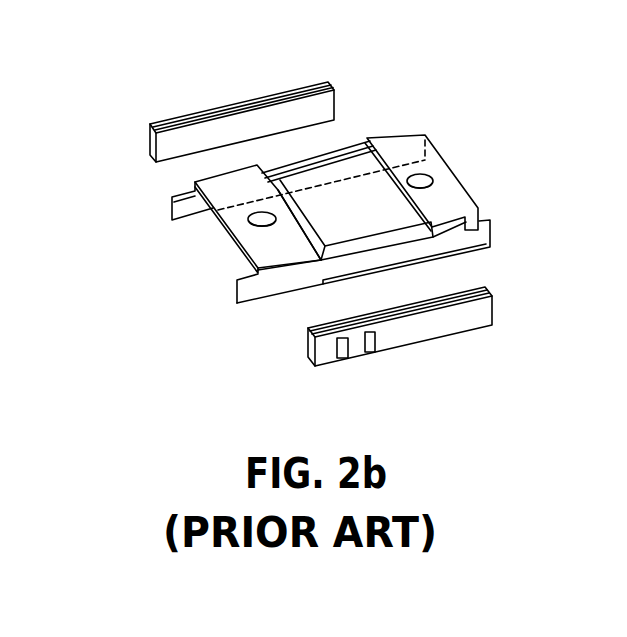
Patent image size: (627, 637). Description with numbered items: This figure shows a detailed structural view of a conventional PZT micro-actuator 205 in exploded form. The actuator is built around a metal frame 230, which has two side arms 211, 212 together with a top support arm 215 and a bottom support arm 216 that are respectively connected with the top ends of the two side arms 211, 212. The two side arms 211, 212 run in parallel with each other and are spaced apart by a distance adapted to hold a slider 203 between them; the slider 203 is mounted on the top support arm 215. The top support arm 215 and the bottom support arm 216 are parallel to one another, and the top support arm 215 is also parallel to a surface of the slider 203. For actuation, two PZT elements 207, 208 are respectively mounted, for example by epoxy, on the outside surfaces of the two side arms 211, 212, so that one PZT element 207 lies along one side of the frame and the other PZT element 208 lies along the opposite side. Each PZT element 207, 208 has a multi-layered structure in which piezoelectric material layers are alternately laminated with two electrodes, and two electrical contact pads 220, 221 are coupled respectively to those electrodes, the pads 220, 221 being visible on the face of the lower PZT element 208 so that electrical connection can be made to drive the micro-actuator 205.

The PZT micro-actuator 205 is at (584, 37).
The PZT element 207 is at (183, 117).
The PZT element 208 is at (484, 310).
The slider 203 is at (456, 183).
The metal frame 230 is at (350, 152).
The top support arm 215 is at (400, 146).
The bottom support arm 216 is at (238, 216).
The side arm 211 is at (185, 207).
The side arm 212 is at (240, 290).
The electrical contact pad 220 is at (342, 354).
The electrical contact pad 221 is at (376, 343).